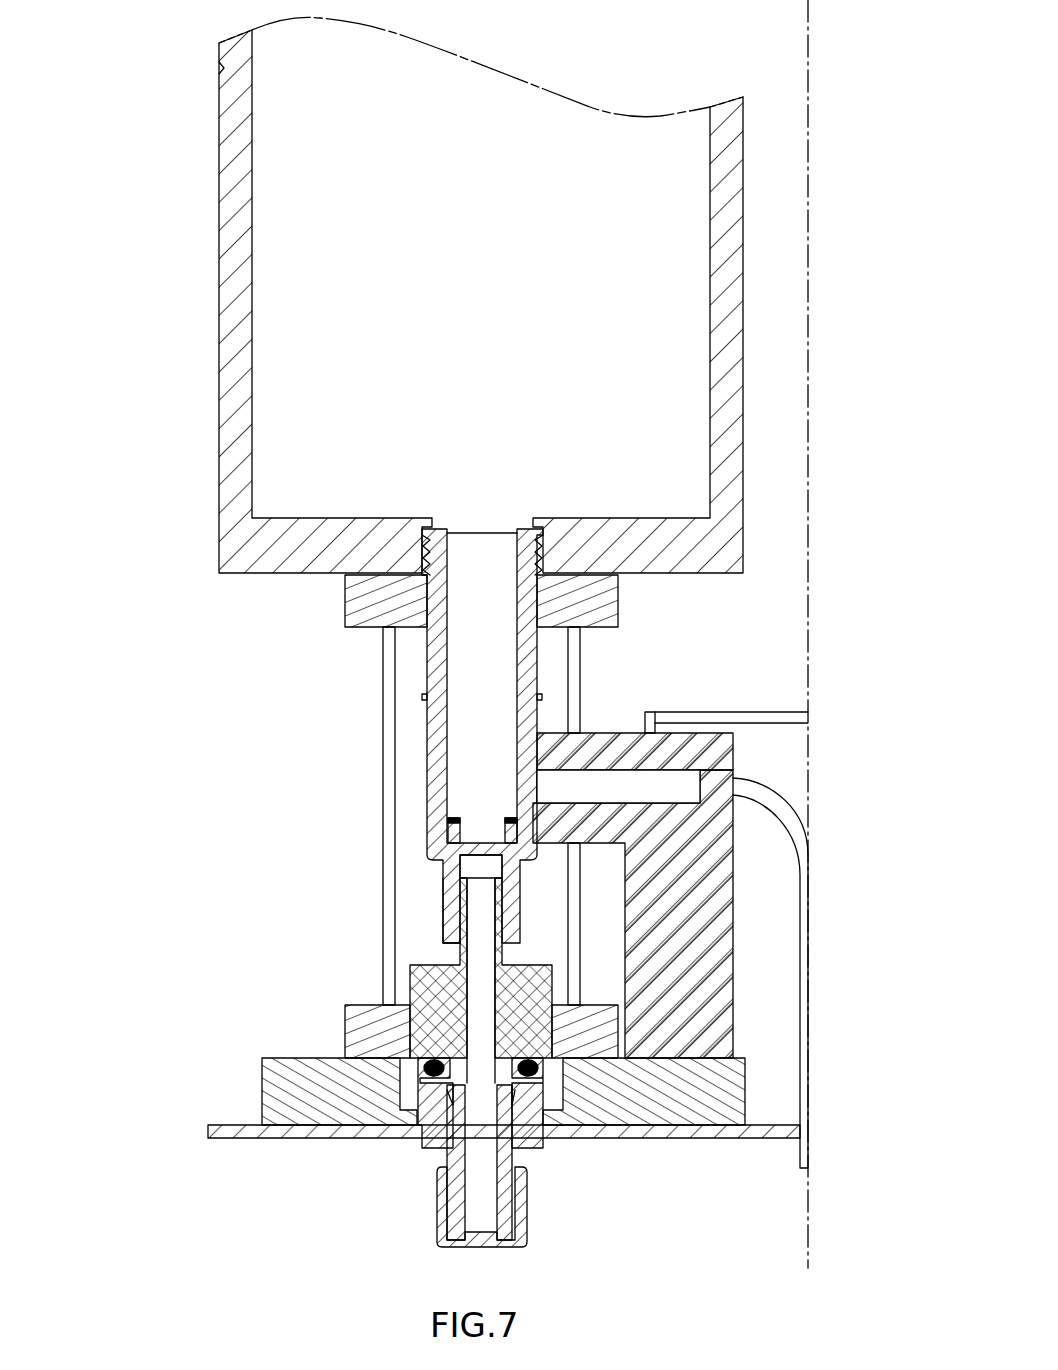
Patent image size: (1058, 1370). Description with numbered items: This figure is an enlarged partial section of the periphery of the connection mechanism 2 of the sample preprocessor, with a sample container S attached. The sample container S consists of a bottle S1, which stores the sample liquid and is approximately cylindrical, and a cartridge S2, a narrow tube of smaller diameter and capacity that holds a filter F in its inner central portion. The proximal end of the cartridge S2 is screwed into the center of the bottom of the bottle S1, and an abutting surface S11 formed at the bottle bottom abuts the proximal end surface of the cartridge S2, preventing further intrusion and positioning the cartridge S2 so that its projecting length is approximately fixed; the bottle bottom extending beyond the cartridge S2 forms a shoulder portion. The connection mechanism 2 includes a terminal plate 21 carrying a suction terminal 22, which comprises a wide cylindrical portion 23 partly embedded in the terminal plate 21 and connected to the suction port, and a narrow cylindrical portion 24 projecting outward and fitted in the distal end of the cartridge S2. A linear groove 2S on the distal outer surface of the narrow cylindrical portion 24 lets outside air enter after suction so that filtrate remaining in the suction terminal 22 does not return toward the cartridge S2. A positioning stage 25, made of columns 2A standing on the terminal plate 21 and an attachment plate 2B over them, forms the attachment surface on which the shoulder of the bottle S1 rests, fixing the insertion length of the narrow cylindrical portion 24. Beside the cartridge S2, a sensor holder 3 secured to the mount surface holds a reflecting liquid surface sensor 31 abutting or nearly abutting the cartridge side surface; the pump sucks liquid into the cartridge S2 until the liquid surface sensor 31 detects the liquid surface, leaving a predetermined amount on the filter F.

The sample container S is at (144, 112).
The bottle S1 is at (218, 262).
The abutting surface S11 is at (432, 527).
The cartridge S2 is at (427, 757).
The filter F is at (487, 840).
The connection mechanism 2 is at (232, 808).
The positioning stage 25 is at (276, 588).
The columns 2A is at (383, 640).
The attachment plate 2B is at (345, 600).
The linear groove 2S is at (448, 910).
The suction terminal 22 is at (308, 945).
The wide cylindrical portion 23 is at (412, 1000).
The narrow cylindrical portion 24 is at (462, 958).
The terminal plate 21 is at (345, 1022).
The sensor holder 3 is at (688, 714).
The liquid surface sensor 31 is at (650, 733).